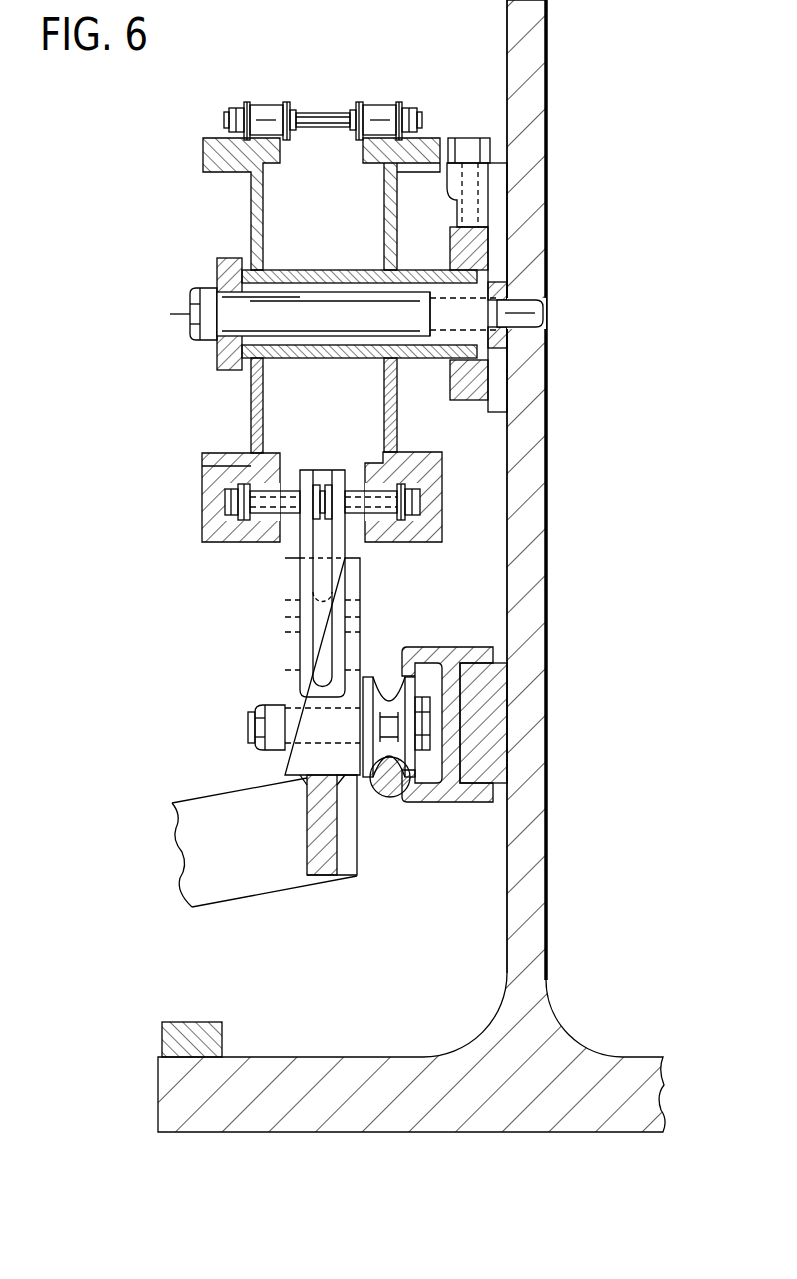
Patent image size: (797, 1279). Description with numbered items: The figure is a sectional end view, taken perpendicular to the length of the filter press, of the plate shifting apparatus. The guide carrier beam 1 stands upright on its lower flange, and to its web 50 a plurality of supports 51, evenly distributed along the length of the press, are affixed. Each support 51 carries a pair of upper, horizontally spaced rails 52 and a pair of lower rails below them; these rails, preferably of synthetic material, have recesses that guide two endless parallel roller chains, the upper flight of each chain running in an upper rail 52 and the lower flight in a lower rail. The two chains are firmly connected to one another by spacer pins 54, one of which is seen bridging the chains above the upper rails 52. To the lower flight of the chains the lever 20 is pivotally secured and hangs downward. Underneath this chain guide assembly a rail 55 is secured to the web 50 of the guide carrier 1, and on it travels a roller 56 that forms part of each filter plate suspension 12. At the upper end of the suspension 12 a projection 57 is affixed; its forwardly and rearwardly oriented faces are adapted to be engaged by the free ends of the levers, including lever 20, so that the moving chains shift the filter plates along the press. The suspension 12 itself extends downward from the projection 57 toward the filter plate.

The guide carrier beam 1 is at (563, 870).
The filter plate suspension 12 is at (196, 857).
The lever 20 is at (313, 547).
The web 50 is at (540, 151).
The supports 51 is at (188, 310).
The upper rails 52 is at (362, 152).
The spacer pins 54 is at (321, 114).
The rail 55 is at (393, 781).
The roller 56 is at (392, 700).
The projection 57 is at (353, 632).